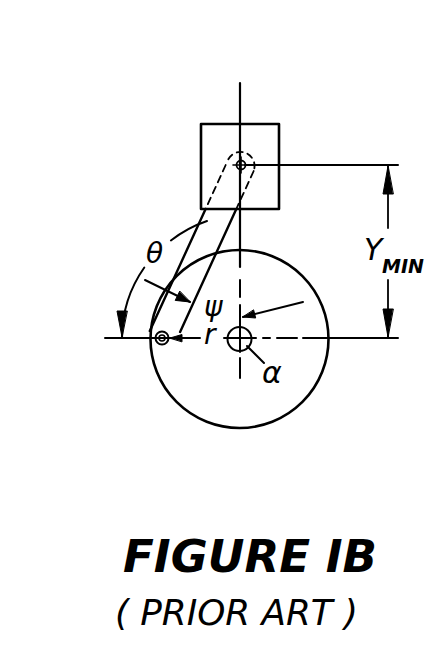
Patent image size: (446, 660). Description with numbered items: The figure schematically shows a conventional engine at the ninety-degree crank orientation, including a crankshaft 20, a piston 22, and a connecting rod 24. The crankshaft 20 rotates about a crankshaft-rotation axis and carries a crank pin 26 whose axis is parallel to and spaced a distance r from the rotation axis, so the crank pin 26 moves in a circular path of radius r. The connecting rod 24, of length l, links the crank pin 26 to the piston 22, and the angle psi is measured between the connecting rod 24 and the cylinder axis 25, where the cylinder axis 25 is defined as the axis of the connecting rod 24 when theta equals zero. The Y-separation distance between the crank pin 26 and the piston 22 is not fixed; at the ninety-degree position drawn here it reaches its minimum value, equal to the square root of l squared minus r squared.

The crankshaft 20 is at (278, 402).
The piston 22 is at (268, 145).
The connecting rod 24 is at (226, 219).
The cylinder axis 25 is at (240, 102).
The crank pin 26 is at (153, 344).